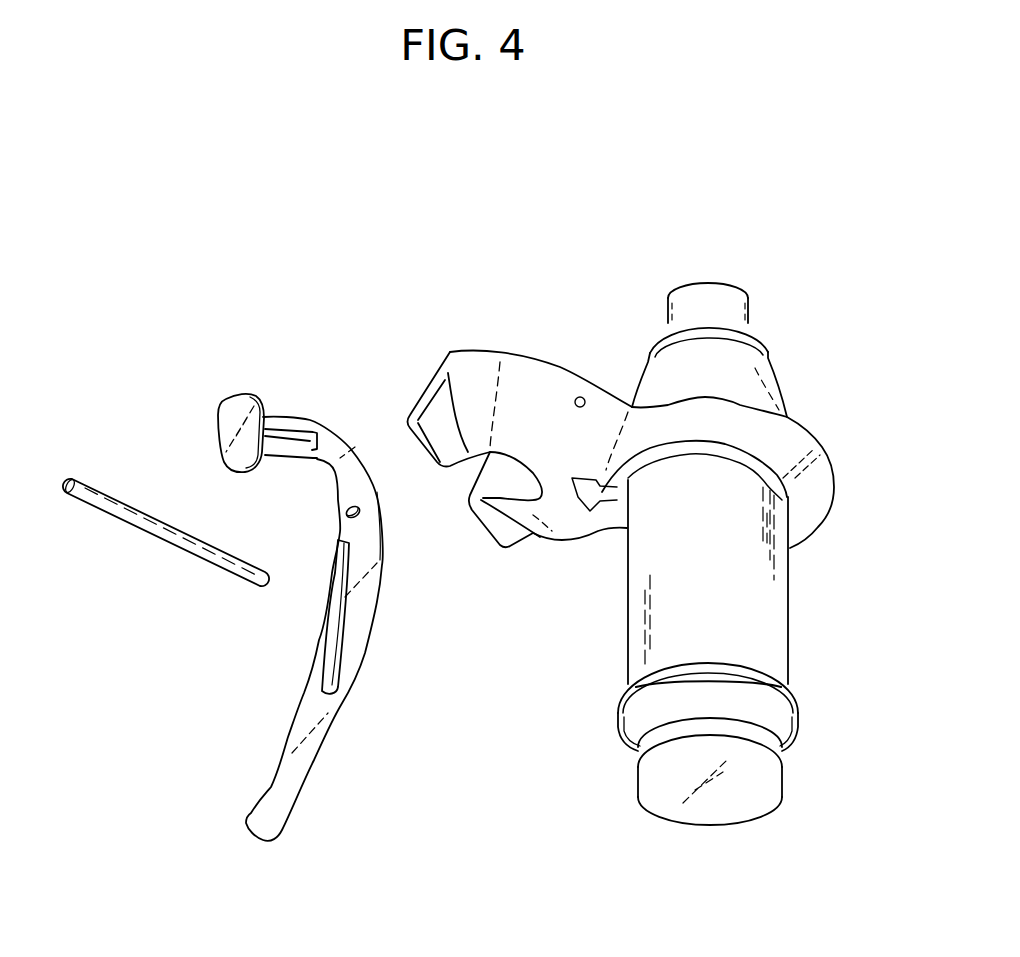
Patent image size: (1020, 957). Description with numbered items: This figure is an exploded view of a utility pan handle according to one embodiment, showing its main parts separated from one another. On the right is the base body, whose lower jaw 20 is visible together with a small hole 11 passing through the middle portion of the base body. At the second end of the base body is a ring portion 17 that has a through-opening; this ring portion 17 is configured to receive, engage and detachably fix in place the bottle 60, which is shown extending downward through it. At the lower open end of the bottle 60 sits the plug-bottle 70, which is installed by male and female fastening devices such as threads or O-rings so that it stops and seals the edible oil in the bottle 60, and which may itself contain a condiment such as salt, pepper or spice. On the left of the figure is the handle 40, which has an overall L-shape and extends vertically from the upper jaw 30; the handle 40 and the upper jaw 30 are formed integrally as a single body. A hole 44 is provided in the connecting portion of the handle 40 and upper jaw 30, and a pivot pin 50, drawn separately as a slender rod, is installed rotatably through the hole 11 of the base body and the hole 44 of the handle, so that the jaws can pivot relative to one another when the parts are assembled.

The hole 11 is at (576, 397).
The ring portion 17 is at (789, 446).
The lower jaw 20 is at (478, 367).
The upper jaw 30 is at (227, 418).
The handle 40 is at (290, 773).
The hole 44 is at (350, 508).
The pivot pin 50 is at (173, 540).
The bottle 60 is at (637, 633).
The plug-bottle 70 is at (648, 724).